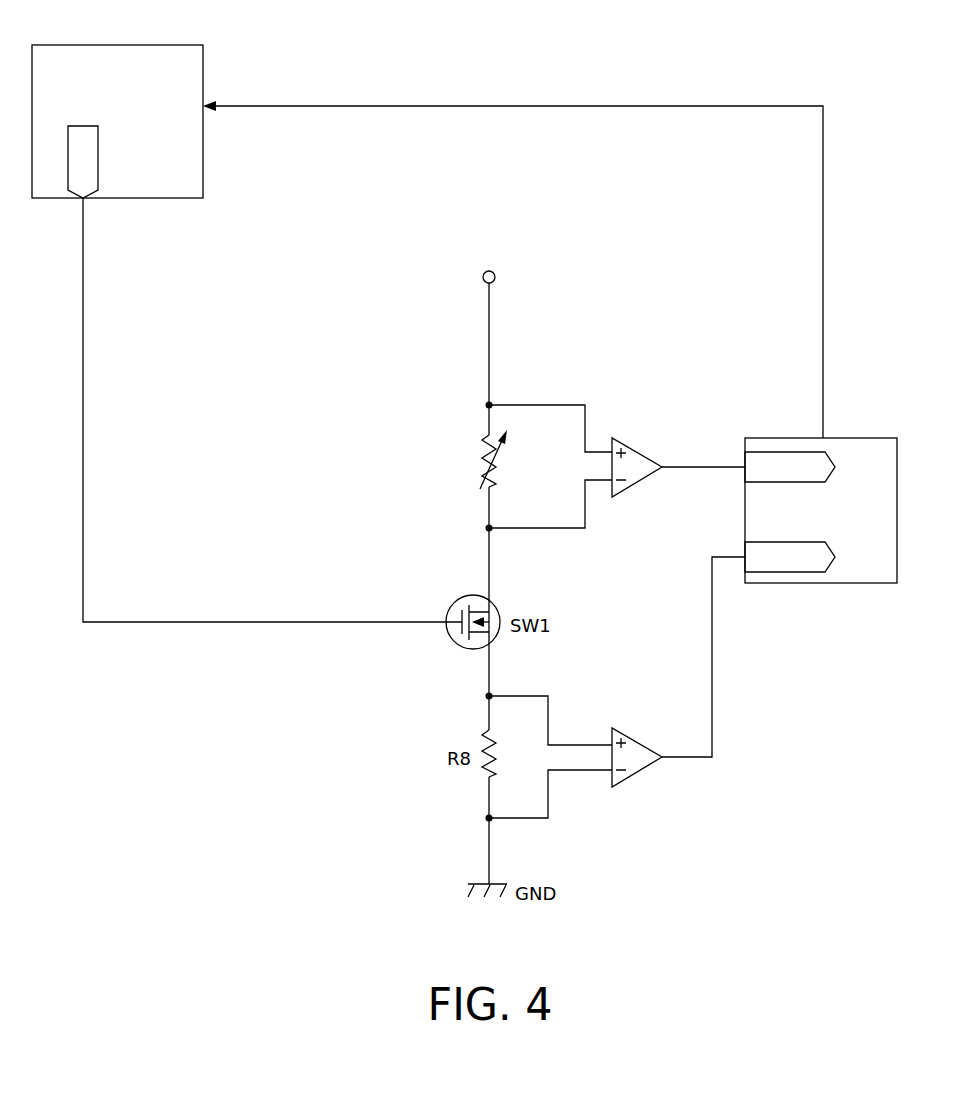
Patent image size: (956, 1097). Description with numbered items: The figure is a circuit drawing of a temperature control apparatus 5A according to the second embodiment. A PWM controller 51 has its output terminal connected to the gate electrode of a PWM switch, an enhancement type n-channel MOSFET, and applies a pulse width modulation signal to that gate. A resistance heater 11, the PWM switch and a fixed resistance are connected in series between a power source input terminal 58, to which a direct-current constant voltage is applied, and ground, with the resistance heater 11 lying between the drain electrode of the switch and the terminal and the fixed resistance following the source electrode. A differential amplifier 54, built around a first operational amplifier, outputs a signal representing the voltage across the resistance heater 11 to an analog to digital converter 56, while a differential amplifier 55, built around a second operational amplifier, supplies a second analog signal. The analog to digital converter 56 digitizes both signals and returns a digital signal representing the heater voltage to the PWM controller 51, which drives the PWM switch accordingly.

The temperature control apparatus 5A is at (755, 78).
The PWM controller 51 is at (120, 45).
The power source input terminal 58 is at (489, 270).
The resistance heater 11 is at (479, 461).
The differential amplifier 54 is at (627, 438).
The differential amplifier 55 is at (624, 728).
The analog to digital converter 56 is at (824, 584).